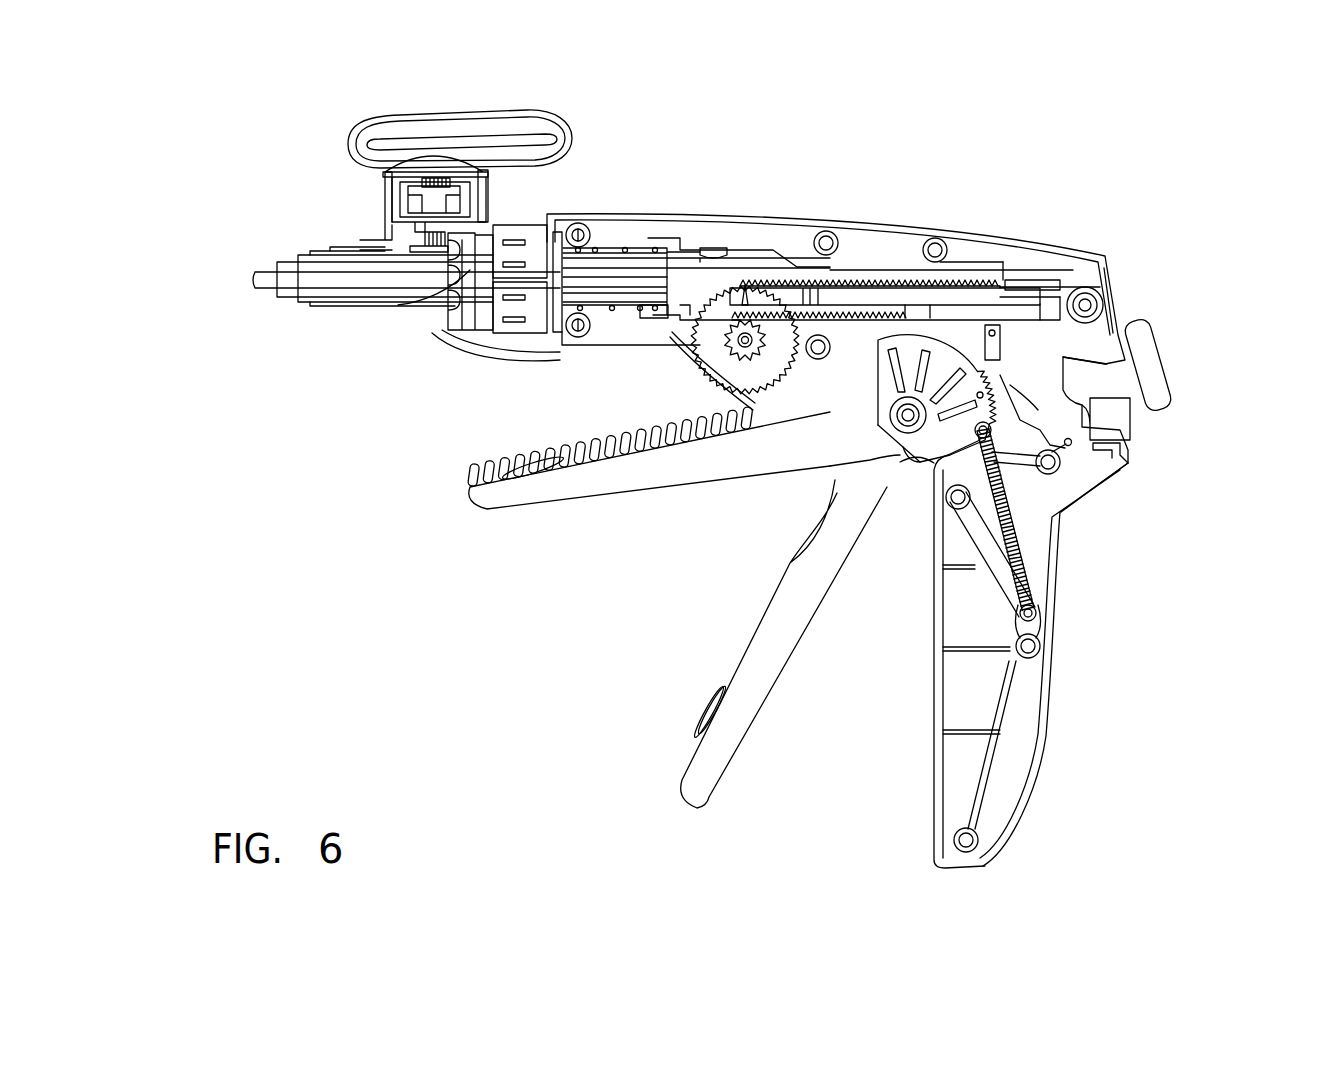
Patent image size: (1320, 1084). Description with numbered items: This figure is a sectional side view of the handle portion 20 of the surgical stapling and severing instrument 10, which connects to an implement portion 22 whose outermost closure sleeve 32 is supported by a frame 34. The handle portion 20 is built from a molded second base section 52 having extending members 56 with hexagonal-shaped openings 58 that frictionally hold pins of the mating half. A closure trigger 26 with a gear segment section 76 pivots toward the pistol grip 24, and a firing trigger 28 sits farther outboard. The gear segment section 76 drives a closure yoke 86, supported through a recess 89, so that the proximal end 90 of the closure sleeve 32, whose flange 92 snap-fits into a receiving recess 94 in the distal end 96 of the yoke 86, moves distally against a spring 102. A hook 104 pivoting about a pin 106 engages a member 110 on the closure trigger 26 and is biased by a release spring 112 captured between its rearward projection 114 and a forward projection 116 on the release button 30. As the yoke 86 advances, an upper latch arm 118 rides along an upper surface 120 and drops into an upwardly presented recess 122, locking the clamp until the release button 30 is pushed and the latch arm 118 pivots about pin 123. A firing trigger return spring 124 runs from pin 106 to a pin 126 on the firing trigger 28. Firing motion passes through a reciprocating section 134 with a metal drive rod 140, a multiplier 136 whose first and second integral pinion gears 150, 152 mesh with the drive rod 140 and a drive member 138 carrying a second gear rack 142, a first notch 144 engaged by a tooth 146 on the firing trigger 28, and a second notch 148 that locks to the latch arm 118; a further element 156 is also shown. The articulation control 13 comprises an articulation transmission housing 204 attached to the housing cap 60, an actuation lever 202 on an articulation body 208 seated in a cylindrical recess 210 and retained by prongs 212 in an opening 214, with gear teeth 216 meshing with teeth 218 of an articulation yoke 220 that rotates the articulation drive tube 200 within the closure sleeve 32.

The surgical stapling and severing instrument 10 is at (1175, 705).
The articulation control 13 is at (295, 148).
The handle portion 20 is at (1148, 617).
The implement portion 22 is at (335, 340).
The pistol grip 24 is at (934, 786).
The closure trigger 26 is at (745, 714).
The firing trigger 28 is at (583, 505).
The release button 30 is at (1147, 343).
The closure sleeve 32 is at (313, 256).
The frame 34 is at (276, 266).
The second base section 52 is at (1048, 735).
The extending members 56 is at (585, 222).
The hexagonal-shaped opening 58 is at (577, 230).
The housing cap 60 is at (533, 233).
The gear segment section 76 is at (972, 333).
The closure yoke 86 is at (973, 260).
The recess 89 is at (720, 257).
The proximal end 90 is at (298, 252).
The flange 92 is at (672, 250).
The receiving recess 94 is at (672, 340).
The distal end 96 is at (653, 312).
The spring 102 is at (632, 262).
The hook 104 is at (970, 510).
The pin 106 is at (1038, 612).
The member 110 is at (900, 457).
The release spring 112 is at (1065, 387).
The rearward projection 114 is at (1122, 466).
The forward projection 116 is at (1095, 417).
The upper latch arm 118 is at (1113, 288).
The upper surface 120 is at (1063, 260).
The upwardly presented recess 122 is at (1018, 295).
The pin 123 is at (1110, 306).
The firing trigger return spring 124 is at (1040, 555).
The pin 126 is at (1005, 472).
The reciprocating section 134 is at (270, 292).
The multiplier 136 is at (729, 381).
The drive member 138 is at (900, 317).
The metal drive rod 140 is at (283, 290).
The second gear rack 142 is at (1020, 290).
The first notch 144 is at (950, 320).
The tooth 146 is at (888, 350).
The second notch 148 is at (847, 278).
The first integral pinion gear 150 is at (713, 403).
The second integral pinion gear 152 is at (697, 363).
The pawl 156 is at (983, 393).
The articulation drive tube 200 is at (300, 310).
The actuation lever 202 is at (575, 136).
The articulation transmission housing 204 is at (440, 295).
The articulation body 208 is at (413, 200).
The cylindrical recess 210 is at (490, 182).
The prongs 212 is at (400, 306).
The opening 214 is at (414, 234).
The gear teeth 216 is at (433, 237).
The teeth 218 is at (432, 337).
The articulation yoke 220 is at (470, 332).